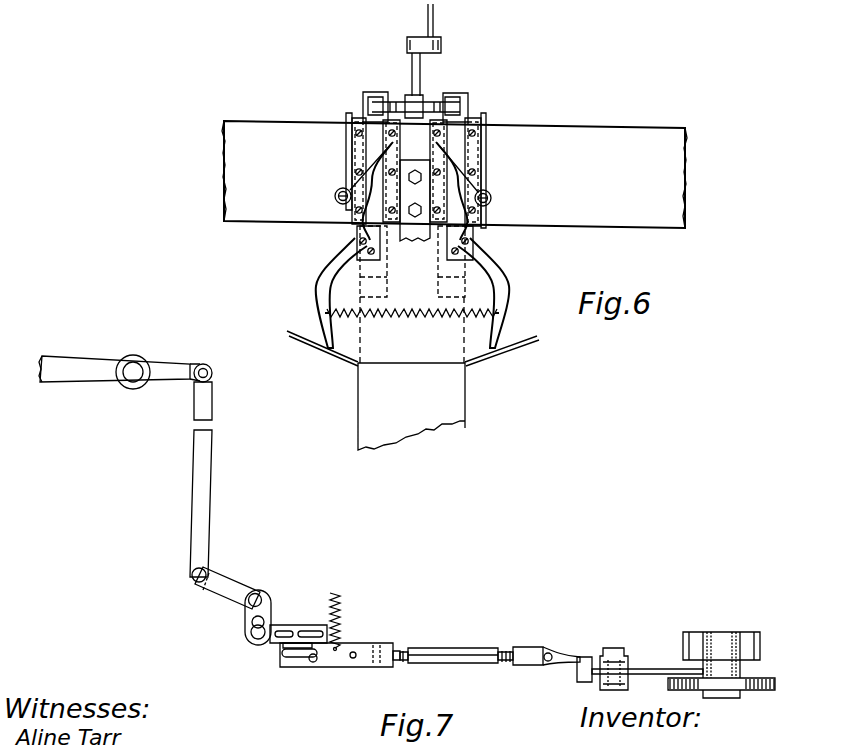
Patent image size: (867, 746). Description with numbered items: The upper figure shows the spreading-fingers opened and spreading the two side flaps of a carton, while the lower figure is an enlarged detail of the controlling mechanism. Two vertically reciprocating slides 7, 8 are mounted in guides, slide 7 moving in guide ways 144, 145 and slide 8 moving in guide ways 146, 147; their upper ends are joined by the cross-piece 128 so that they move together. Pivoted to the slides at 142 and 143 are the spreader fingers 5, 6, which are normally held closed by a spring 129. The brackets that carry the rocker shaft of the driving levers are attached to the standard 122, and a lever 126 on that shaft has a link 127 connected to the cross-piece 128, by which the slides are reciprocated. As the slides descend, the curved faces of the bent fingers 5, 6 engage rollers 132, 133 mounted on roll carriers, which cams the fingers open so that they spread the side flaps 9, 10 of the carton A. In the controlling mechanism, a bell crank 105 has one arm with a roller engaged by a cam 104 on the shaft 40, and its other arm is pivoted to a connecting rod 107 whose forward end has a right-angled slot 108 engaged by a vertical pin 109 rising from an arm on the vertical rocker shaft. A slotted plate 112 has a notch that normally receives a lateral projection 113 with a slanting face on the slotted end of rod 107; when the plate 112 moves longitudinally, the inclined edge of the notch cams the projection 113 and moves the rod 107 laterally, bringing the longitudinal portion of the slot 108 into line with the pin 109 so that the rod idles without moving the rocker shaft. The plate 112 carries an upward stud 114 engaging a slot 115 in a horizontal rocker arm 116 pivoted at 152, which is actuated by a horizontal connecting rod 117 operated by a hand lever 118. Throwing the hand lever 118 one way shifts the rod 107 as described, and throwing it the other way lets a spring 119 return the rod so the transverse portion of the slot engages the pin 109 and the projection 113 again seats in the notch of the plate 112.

In FIG. 6, the standard 122 is at (572, 133).
In FIG. 6, the lever 126 is at (434, 12).
In FIG. 6, the link 127 is at (420, 70).
In FIG. 6, the cross-piece 128 is at (428, 103).
In FIG. 6, the guide way 144 is at (355, 152).
In FIG. 6, the guide way 145 is at (398, 156).
In FIG. 6, the guide way 146 is at (470, 155).
In FIG. 6, the guide way 147 is at (487, 160).
In FIG. 6, the roller 132 is at (334, 197).
In FIG. 6, the roller 133 is at (492, 198).
In FIG. 6, the pivot 142 is at (356, 243).
In FIG. 6, the pivot 143 is at (475, 244).
In FIG. 6, the spreader finger 5 is at (318, 293).
In FIG. 6, the spreader finger 6 is at (500, 291).
In FIG. 6, the slide 7 is at (375, 273).
In FIG. 6, the slide 8 is at (450, 272).
In FIG. 6, the spring 129 is at (410, 318).
In FIG. 6, the side flap 9 is at (302, 345).
In FIG. 6, the side flap 10 is at (508, 347).
In FIG. 6, the carton A is at (445, 400).
In FIG. 7, the hand lever 118 is at (115, 332).
In FIG. 7, the horizontal connecting rod 117 is at (206, 492).
In FIG. 7, the horizontal rocker arm 116 is at (229, 581).
In FIG. 7, the pivot 152 is at (258, 595).
In FIG. 7, the slot 115 is at (252, 621).
In FIG. 7, the stud 114 is at (250, 632).
In FIG. 7, the slotted plate 112 is at (302, 624).
In FIG. 7, the lateral projection 113 is at (284, 647).
In FIG. 7, the right-angled slot 108 is at (303, 657).
In FIG. 7, the vertical pin 109 is at (318, 660).
In FIG. 7, the spring 119 is at (341, 596).
In FIG. 7, the connecting rod 107 is at (478, 648).
In FIG. 7, the bell crank 105 is at (640, 668).
In FIG. 7, the shaft 40 is at (722, 640).
In FIG. 7, the cam 104 is at (767, 678).